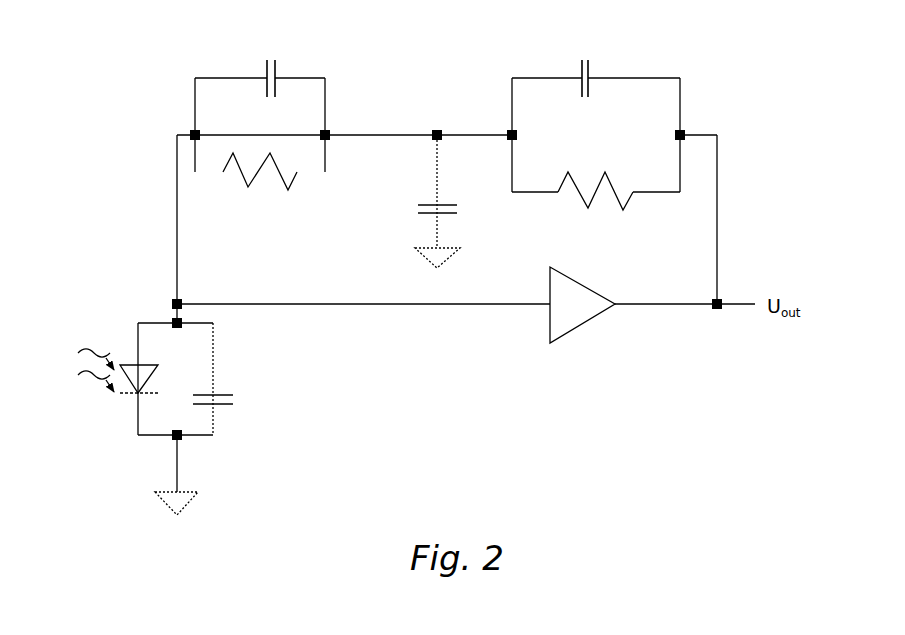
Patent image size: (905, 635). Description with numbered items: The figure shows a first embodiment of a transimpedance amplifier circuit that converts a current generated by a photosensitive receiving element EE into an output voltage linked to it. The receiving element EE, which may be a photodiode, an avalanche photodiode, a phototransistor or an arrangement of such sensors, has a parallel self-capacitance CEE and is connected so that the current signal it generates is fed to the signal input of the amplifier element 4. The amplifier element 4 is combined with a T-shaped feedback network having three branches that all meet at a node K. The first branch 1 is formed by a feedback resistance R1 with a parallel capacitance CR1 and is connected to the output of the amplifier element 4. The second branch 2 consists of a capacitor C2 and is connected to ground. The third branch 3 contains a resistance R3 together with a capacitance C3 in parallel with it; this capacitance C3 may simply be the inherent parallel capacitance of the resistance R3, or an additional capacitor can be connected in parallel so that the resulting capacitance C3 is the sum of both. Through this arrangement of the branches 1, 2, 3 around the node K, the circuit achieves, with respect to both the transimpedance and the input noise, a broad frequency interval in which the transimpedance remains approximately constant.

The first branch 1 is at (659, 149).
The second branch 2 is at (398, 205).
The third branch 3 is at (209, 131).
The amplifier element 4 is at (591, 324).
The capacitance C3 is at (312, 67).
The resistance R3 is at (239, 189).
The node K is at (457, 116).
The capacitor C2 is at (392, 187).
The parallel capacitance CR1 is at (631, 69).
The feedback resistance R1 is at (614, 214).
The photosensitive receiving element EE is at (102, 396).
The parallel self-capacitance CEE is at (252, 385).